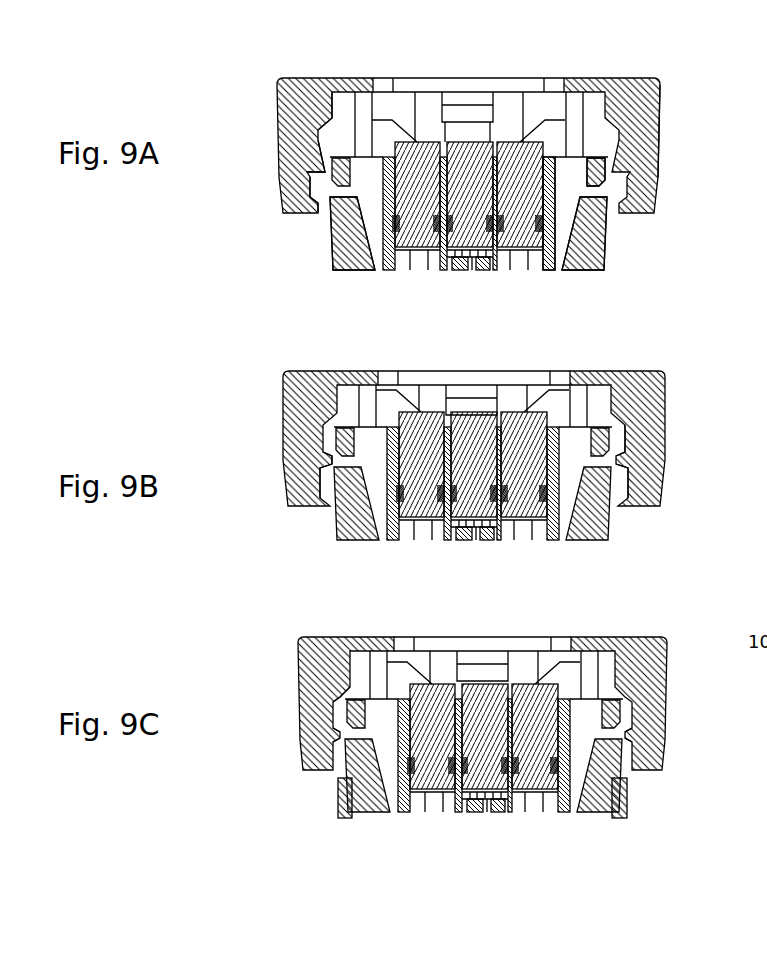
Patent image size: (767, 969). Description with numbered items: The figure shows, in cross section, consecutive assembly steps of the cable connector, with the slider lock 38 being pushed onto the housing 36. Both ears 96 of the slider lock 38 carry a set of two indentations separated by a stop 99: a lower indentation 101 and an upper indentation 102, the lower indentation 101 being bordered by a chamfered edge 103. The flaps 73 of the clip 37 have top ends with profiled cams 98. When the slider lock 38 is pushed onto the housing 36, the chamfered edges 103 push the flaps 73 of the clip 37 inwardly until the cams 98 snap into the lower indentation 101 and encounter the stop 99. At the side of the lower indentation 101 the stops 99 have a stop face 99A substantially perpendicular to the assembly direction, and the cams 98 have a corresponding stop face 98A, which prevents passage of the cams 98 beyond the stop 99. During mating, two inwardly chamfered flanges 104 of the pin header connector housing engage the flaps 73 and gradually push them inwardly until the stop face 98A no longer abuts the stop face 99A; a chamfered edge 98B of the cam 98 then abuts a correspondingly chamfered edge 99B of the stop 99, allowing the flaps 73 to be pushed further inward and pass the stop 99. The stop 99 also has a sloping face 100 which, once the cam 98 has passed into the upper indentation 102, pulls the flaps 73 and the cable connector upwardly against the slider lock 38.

In FIG. 9A, the slider lock 38 is at (648, 100).
In FIG. 9A, the ears of the slider lock 96 is at (660, 135).
In FIG. 9A, the housing 36 is at (603, 168).
In FIG. 9A, the flaps of the clip 73 is at (593, 233).
In FIG. 9A, the clip 37 is at (550, 253).
In FIG. 9A, the upper indentation 102 is at (317, 122).
In FIG. 9A, the stop 99 is at (315, 165).
In FIG. 9B, the stop 99 is at (625, 452).
In FIG. 9A, the lower indentation 101 is at (305, 177).
In FIG. 9A, the chamfered edge 103 is at (305, 203).
In FIG. 9A, the cam 98 is at (325, 213).
In FIG. 9B, the cam 98 is at (627, 475).
In FIG. 9B, the stop face of the cam 98A is at (329, 460).
In FIG. 9C, the stop face of the cam 98A is at (623, 728).
In FIG. 9B, the stop face of the stop 99A is at (329, 466).
In FIG. 9C, the stop face of the stop 99A is at (627, 738).
In FIG. 9C, the sloping face 100 is at (340, 700).
In FIG. 9C, the chamfered edge of the cam 98B is at (331, 733).
In FIG. 9C, the chamfered edge of the stop 99B is at (343, 731).
In FIG. 9C, the chamfered flanges 104 is at (343, 803).